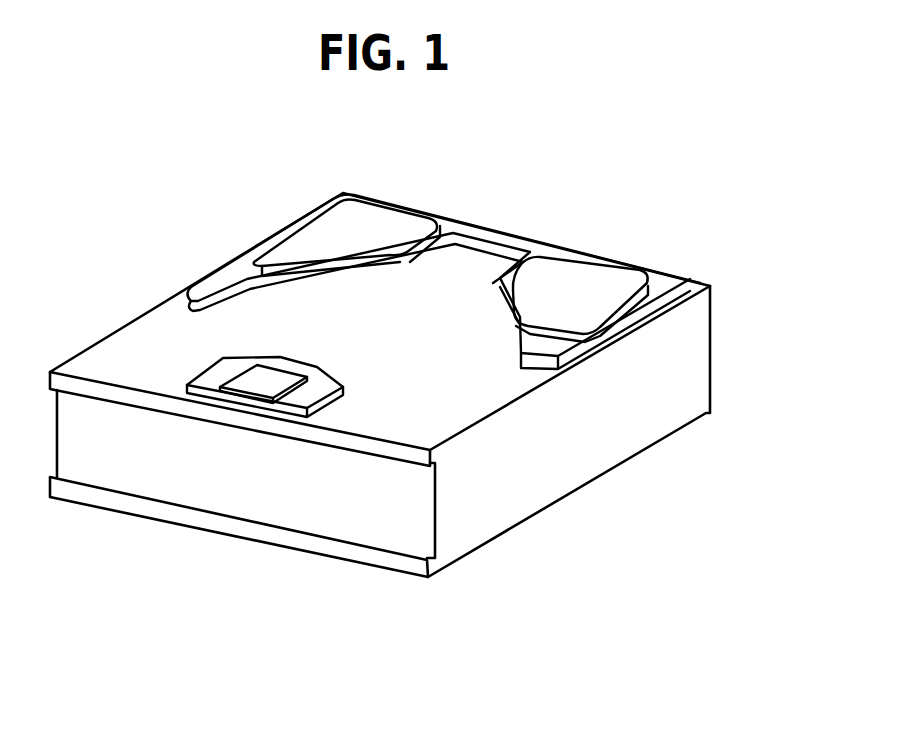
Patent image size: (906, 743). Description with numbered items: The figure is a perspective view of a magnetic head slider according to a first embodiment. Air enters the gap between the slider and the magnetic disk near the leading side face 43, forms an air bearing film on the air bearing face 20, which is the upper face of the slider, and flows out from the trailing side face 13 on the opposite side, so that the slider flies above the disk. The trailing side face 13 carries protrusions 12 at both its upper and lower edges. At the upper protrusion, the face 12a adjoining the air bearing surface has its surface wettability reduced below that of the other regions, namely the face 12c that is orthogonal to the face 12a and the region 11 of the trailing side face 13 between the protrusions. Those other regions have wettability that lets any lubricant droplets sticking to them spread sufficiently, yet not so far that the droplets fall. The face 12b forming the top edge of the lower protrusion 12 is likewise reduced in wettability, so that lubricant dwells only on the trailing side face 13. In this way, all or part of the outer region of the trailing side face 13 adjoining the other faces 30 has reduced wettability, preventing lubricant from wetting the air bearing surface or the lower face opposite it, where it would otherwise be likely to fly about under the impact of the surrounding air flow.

The region 11 is at (378, 495).
The protrusions 12 is at (380, 415).
The face adjoining the air bearing surface 12a is at (380, 329).
The face of the lower protrusion 12b is at (120, 503).
The face orthogonal to face 12a 12c is at (608, 431).
The trailing side face 13 is at (419, 451).
The air bearing face 20 is at (323, 323).
The other faces 30 is at (453, 392).
The leading side face 43 is at (713, 313).